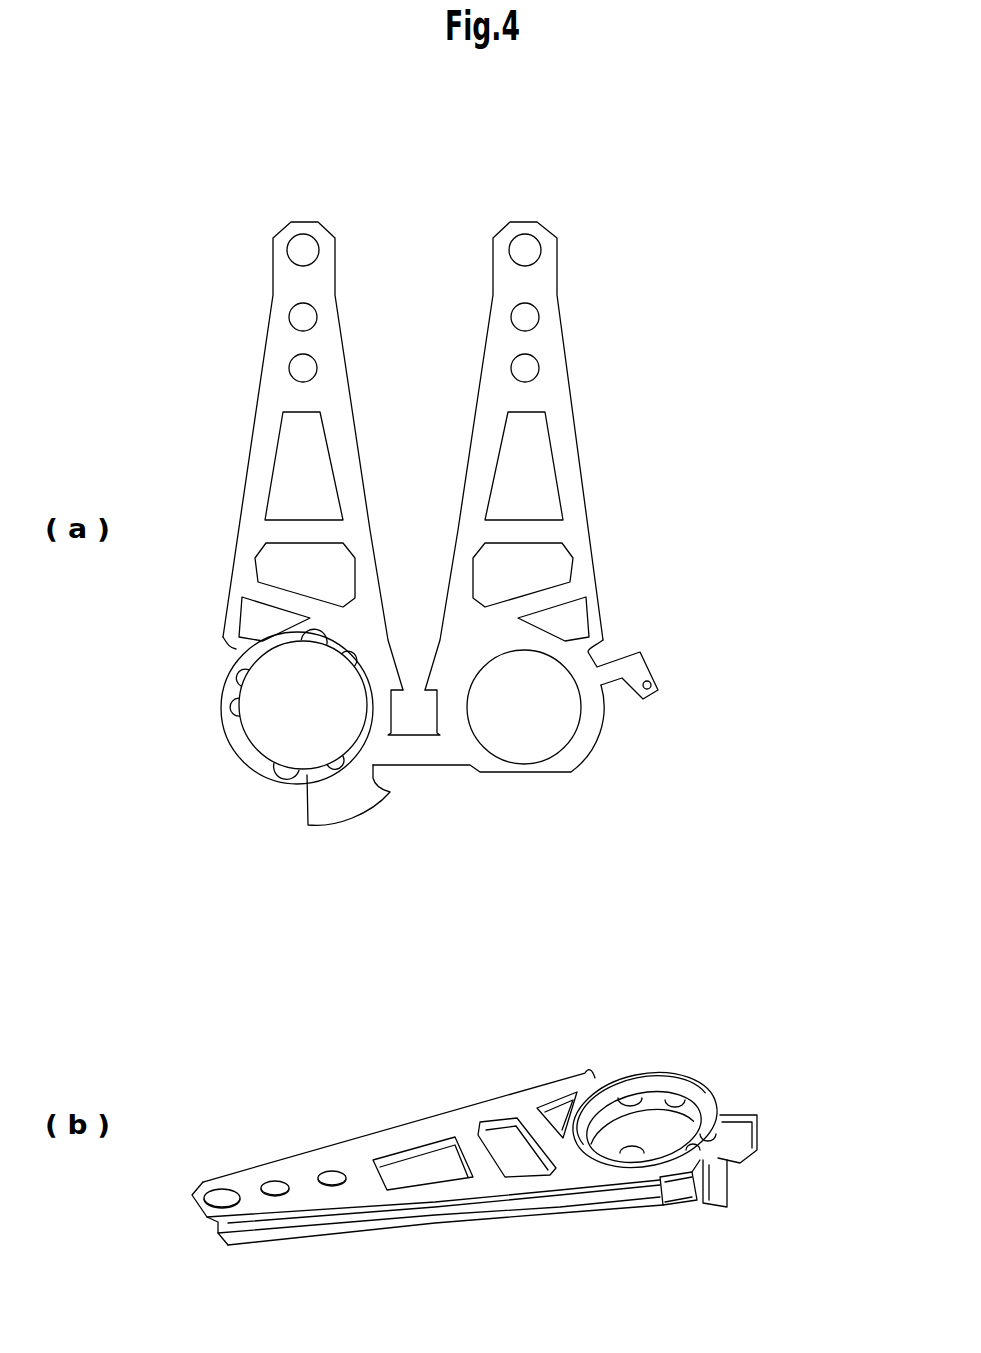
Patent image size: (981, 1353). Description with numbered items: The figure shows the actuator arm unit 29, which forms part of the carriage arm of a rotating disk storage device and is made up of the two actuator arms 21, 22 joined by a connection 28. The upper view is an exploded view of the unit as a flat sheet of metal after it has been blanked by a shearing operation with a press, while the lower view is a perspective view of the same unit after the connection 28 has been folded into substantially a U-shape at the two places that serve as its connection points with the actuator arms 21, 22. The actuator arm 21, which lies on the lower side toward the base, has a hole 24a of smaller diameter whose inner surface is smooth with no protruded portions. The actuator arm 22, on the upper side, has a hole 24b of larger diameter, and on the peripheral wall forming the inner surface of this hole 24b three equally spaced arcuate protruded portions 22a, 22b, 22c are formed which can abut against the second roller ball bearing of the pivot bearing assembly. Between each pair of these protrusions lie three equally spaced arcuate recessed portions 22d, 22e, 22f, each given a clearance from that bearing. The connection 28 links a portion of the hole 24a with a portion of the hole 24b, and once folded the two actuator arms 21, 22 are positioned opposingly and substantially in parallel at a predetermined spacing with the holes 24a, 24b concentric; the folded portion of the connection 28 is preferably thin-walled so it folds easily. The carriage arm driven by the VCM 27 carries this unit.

The actuator arm 21 is at (568, 370).
The actuator arm 22 is at (245, 483).
The arcuate protruded portion 22a is at (246, 678).
The arcuate protruded portion 22b is at (270, 762).
The arcuate protruded portion 22c is at (352, 662).
The arcuate recessed portion 22d is at (242, 712).
The arcuate recessed portion 22e is at (355, 735).
The arcuate recessed portion 22f is at (340, 655).
The hole 24a is at (558, 727).
The hole 24b is at (268, 735).
The VCM 27 is at (333, 1222).
The connection 28 is at (428, 755).
The actuator arm unit 29 is at (438, 197).